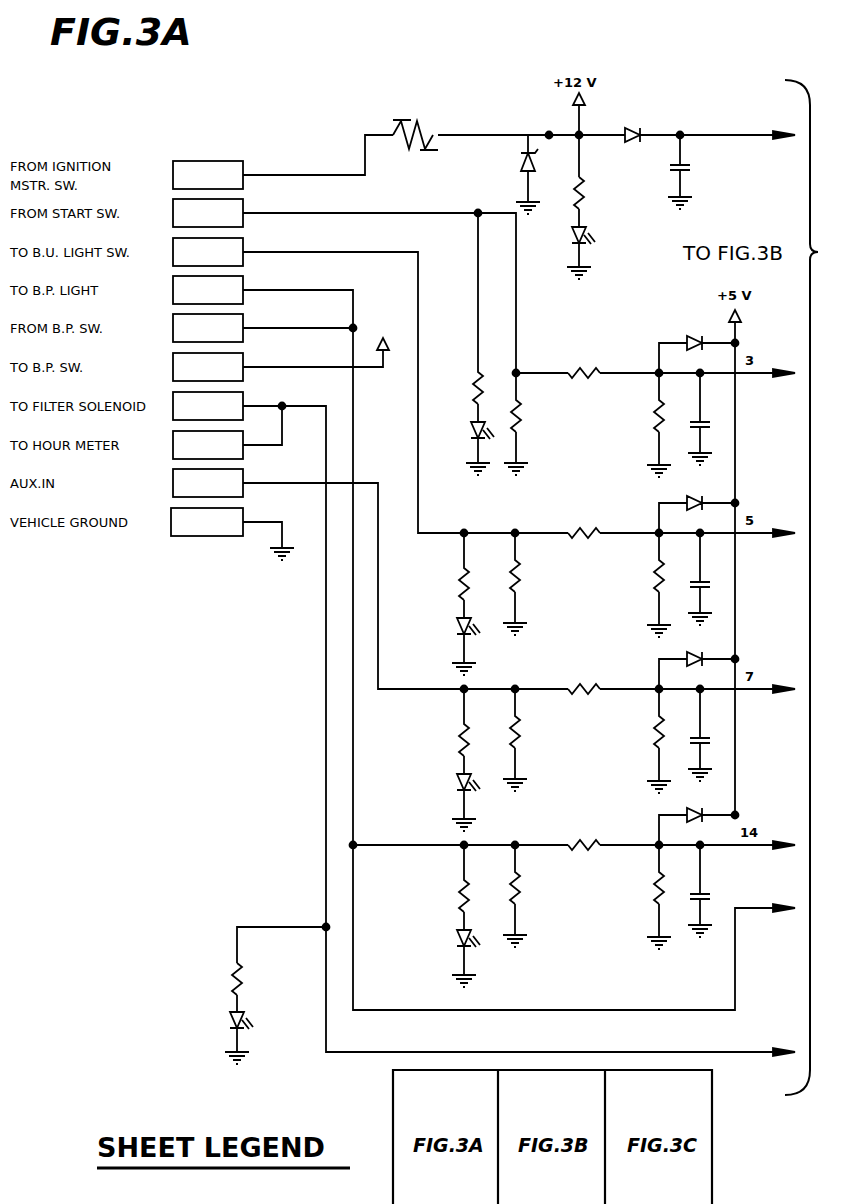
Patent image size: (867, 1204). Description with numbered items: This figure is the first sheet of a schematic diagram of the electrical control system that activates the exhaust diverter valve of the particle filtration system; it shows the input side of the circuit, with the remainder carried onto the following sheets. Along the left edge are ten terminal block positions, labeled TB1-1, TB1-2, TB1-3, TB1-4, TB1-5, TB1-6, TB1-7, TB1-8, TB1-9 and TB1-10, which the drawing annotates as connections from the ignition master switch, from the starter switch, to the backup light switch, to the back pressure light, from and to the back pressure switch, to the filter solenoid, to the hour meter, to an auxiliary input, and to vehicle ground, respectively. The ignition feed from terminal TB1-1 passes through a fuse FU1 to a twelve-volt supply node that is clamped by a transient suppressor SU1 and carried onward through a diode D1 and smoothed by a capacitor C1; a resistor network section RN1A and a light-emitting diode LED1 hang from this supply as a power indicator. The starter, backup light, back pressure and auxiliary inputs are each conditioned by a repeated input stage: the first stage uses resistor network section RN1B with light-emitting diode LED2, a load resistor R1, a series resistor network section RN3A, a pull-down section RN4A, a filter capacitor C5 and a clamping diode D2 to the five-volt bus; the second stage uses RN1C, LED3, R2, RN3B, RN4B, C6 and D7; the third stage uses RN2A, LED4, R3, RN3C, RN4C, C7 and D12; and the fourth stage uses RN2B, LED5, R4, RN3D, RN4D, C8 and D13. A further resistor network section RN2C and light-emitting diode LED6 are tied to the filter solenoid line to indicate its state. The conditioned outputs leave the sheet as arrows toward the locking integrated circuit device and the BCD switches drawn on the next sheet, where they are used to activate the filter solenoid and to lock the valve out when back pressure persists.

The terminal block 1 position 1 (from ignition master switch) TB1-1 is at (283, 162).
The terminal block 1 position 2 (from start switch) TB1-2 is at (344, 284).
The terminal block 1 position 3 (to backup light switch) TB1-3 is at (370, 384).
The terminal block 1 position 4 (to B.P. light) TB1-4 is at (484, 641).
The terminal block 1 position 5 (from B.P. switch) TB1-5 is at (263, 326).
The terminal block 1 position 6 (to B.P. switch) TB1-6 is at (289, 348).
The terminal block 1 position 7 (to filter solenoid) TB1-7 is at (484, 722).
The terminal block 1 position 8 (to hour meter) TB1-8 is at (227, 432).
The terminal block 1 position 9 (aux in) TB1-9 is at (370, 577).
The terminal block 1 position 10 (vehicle ground) TB1-10 is at (232, 532).
The fuse RUE250 FU1 is at (482, 115).
The transient suppressor P6KE20A SU1 is at (496, 174).
The diode 1N4001 D1 is at (687, 114).
The capacitor 10uF/35V C1 is at (720, 171).
The resistor network 1 section A 1K RN1A is at (597, 181).
The LED MV5053 LED1 is at (610, 249).
The resistor network 1 section B 1K RN1B is at (456, 317).
The LED MV5053 LED2 is at (458, 448).
The resistor 180 ohm 3W R1 is at (544, 424).
The resistor network 3 section A 2K RN3A is at (586, 356).
The resistor network 4 section A 1.5K RN4A is at (638, 425).
The capacitor .01uF C5 is at (718, 419).
The diode 1N4148 D2 is at (699, 344).
The resistor network 1 section C 1K RN1C is at (442, 575).
The LED MV5053 LED3 is at (443, 646).
The resistor 180 ohm 3W R2 is at (544, 584).
The resistor network 3 section B 2K RN3B is at (586, 516).
The resistor network 4 section B 1.5K RN4B is at (638, 585).
The capacitor .01uF C6 is at (718, 579).
The diode 1N4148 D7 is at (699, 504).
The resistor network 2 section A 1K RN2A is at (442, 731).
The LED MV5053 LED4 is at (443, 802).
The resistor 180 ohm 3W R3 is at (544, 740).
The resistor network 3 section C 2K RN3C is at (586, 672).
The resistor network 4 section C 1.5K RN4C is at (638, 741).
The capacitor .01uF C7 is at (718, 735).
The diode 1N4148 D12 is at (699, 660).
The resistor network 2 section B 1K RN2B is at (442, 887).
The LED MV5053 LED5 is at (443, 958).
The resistor 180 ohm 3W R4 is at (544, 896).
The resistor network 3 section D 2K RN3D is at (586, 828).
The resistor network 4 section D 1.5K RN4D is at (638, 897).
The capacitor .01uF C8 is at (718, 891).
The diode 1N4148 D13 is at (699, 816).
The resistor network 2 section C 1K RN2C is at (212, 976).
The LED MV5053 LED6 is at (209, 1038).